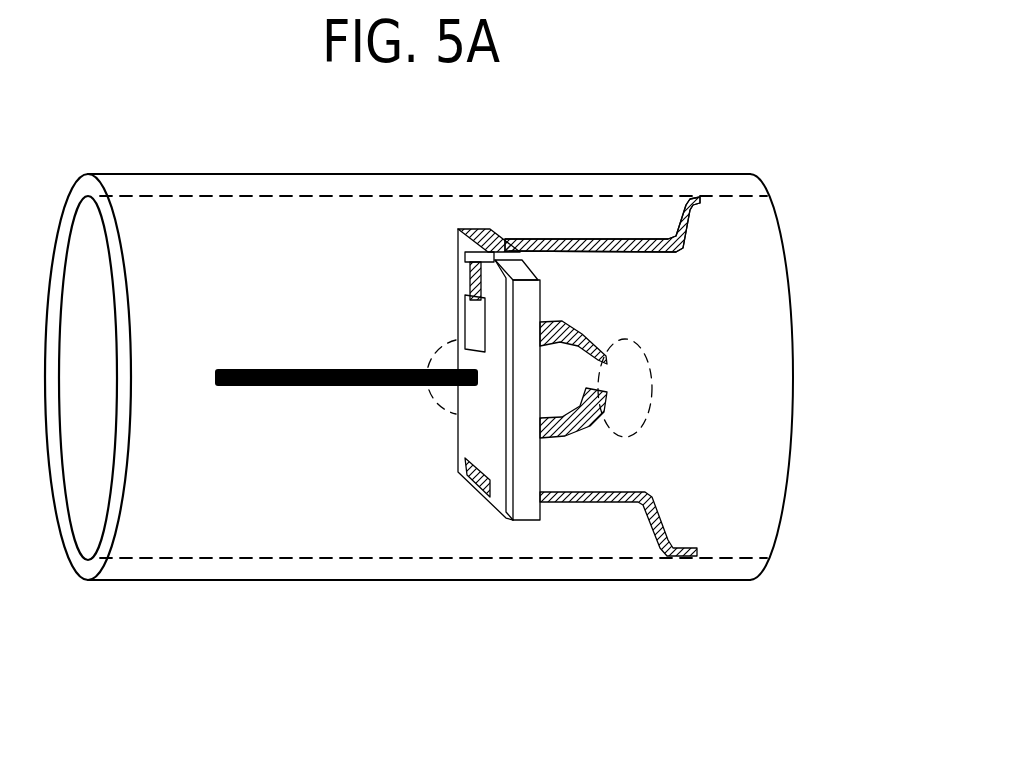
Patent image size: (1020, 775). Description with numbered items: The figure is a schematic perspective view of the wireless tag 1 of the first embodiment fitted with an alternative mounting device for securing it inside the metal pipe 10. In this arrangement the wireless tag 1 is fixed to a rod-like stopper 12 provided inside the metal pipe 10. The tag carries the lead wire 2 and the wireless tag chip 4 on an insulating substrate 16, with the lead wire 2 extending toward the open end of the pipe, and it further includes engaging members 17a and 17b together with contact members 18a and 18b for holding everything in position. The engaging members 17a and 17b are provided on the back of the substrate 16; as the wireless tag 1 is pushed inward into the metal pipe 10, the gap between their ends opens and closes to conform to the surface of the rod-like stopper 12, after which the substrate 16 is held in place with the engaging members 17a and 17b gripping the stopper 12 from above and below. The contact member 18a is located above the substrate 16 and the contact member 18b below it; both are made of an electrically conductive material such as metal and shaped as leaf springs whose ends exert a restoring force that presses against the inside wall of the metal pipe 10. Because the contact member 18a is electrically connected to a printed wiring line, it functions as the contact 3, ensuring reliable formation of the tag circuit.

The wireless tag 1 is at (716, 669).
The lead wire 2 is at (292, 389).
The contact 3 is at (602, 224).
The wireless tag chip 4 is at (470, 312).
The metal pipe 10 is at (712, 565).
The rod-like stopper 12 is at (652, 390).
The insulating substrate 16 is at (528, 512).
The engaging member 17a is at (565, 326).
The engaging member 17b is at (552, 440).
The contact member 18a is at (683, 198).
The contact member 18b is at (668, 556).